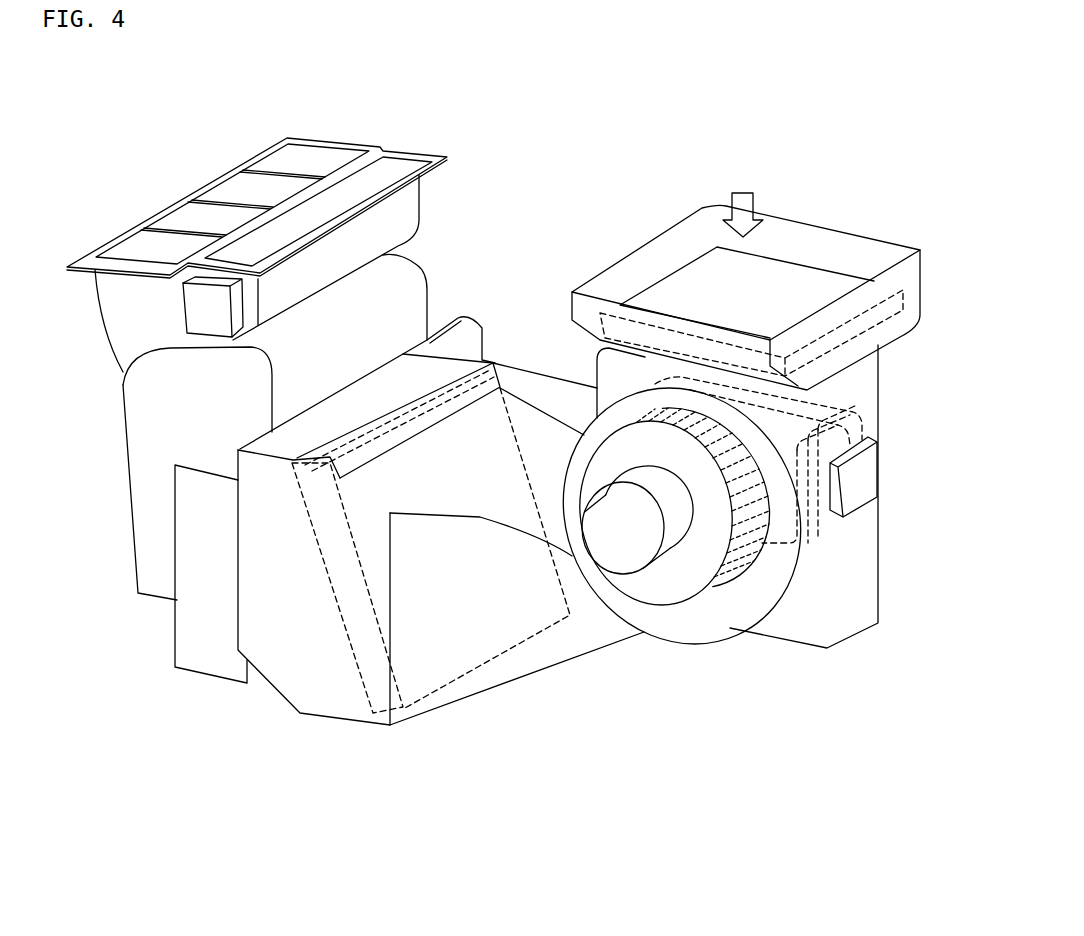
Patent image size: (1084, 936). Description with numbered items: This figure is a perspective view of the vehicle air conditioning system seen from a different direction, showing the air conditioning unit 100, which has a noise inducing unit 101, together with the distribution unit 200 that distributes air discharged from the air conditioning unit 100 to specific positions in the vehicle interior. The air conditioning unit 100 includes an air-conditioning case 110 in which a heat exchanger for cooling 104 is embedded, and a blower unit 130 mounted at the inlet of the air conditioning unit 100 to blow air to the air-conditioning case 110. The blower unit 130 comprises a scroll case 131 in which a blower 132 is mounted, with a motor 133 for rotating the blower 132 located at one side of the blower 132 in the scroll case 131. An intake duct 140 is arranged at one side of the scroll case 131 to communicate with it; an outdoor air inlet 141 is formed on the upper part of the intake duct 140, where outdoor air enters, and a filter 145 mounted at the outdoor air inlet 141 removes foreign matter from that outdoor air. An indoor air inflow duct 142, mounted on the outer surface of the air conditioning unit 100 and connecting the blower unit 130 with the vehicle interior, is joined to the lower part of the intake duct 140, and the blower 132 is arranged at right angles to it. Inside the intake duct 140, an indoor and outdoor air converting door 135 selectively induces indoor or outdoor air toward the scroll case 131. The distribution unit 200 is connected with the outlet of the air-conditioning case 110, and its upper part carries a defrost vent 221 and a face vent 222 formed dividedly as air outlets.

The air conditioning unit 100 is at (544, 466).
The noise inducing unit 101 is at (515, 640).
The heat exchanger for cooling 104 is at (333, 593).
The air-conditioning case 110 is at (347, 726).
The blower unit 130 is at (682, 581).
The scroll case 131 is at (677, 643).
The blower 132 is at (737, 572).
The motor 133 is at (612, 552).
The indoor and outdoor air converting door 135 is at (800, 547).
The intake duct 140 is at (768, 382).
The outdoor air inlet 141 is at (820, 248).
The indoor air inflow duct 142 is at (540, 392).
The filter 145 is at (870, 330).
The distribution unit 200 is at (297, 220).
The defrost vent 221 is at (387, 178).
The face vent 222 is at (303, 167).